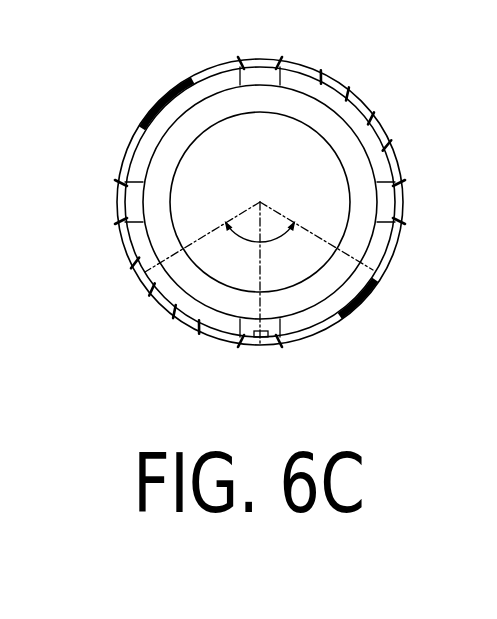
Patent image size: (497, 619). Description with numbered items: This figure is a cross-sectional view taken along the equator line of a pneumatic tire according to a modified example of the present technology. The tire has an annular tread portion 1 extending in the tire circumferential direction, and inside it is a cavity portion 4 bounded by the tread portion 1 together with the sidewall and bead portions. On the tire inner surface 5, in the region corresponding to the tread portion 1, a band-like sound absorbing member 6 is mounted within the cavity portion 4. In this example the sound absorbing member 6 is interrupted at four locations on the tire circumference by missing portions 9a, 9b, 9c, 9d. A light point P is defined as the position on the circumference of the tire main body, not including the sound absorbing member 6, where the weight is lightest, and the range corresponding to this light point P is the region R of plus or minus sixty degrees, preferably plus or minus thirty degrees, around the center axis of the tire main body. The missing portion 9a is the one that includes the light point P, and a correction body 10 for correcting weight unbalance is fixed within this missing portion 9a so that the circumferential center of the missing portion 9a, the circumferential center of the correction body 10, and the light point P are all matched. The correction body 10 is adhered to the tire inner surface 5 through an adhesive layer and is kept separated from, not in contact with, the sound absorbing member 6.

The tread portion 1 is at (315, 68).
The cavity portion 4 is at (332, 132).
The tire inner surface 5 is at (162, 107).
The sound absorbing member 6 is at (197, 86).
The missing portion 9a is at (287, 347).
The missing portion 9b is at (131, 201).
The missing portion 9c is at (262, 78).
The missing portion 9d is at (387, 203).
The correction body 10 is at (252, 347).
The light point P is at (260, 350).
The region R is at (265, 246).